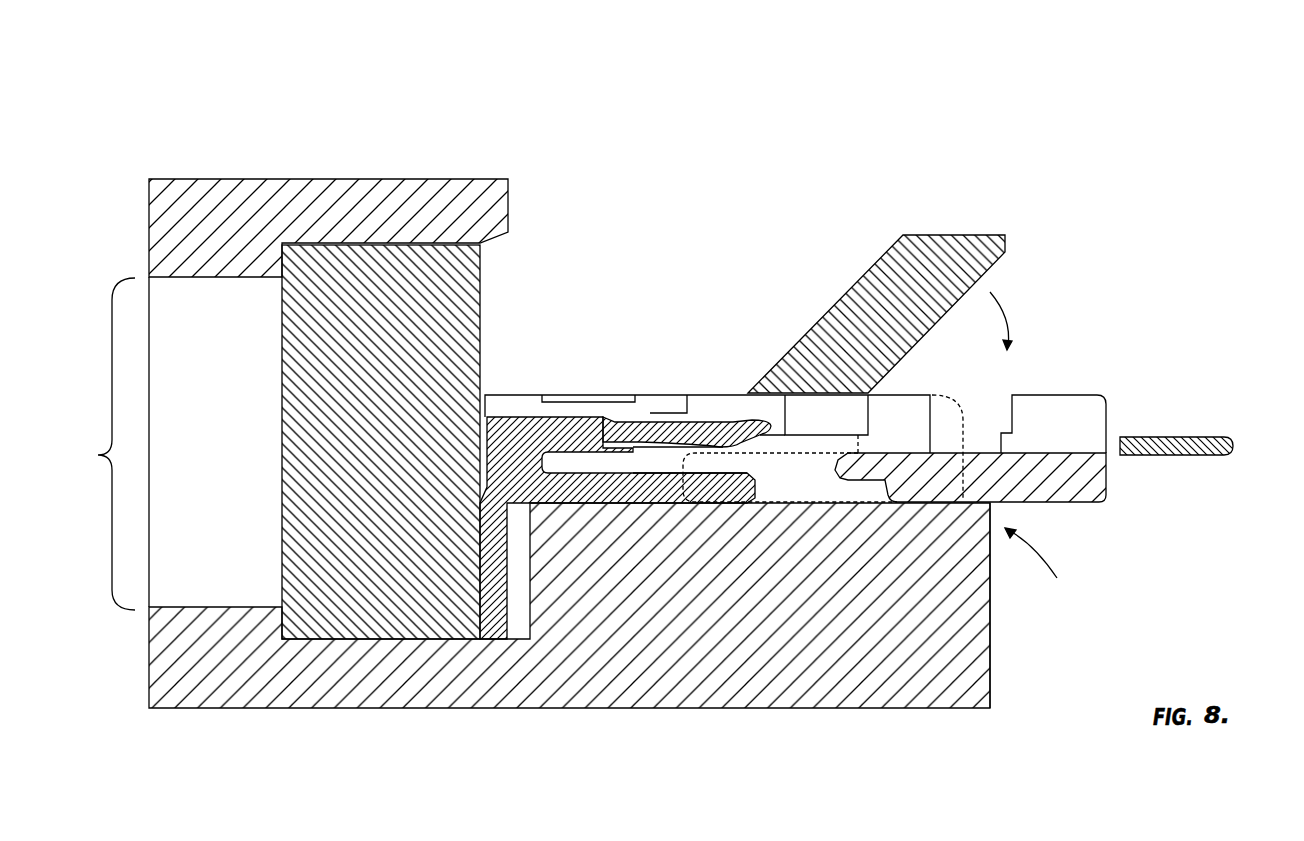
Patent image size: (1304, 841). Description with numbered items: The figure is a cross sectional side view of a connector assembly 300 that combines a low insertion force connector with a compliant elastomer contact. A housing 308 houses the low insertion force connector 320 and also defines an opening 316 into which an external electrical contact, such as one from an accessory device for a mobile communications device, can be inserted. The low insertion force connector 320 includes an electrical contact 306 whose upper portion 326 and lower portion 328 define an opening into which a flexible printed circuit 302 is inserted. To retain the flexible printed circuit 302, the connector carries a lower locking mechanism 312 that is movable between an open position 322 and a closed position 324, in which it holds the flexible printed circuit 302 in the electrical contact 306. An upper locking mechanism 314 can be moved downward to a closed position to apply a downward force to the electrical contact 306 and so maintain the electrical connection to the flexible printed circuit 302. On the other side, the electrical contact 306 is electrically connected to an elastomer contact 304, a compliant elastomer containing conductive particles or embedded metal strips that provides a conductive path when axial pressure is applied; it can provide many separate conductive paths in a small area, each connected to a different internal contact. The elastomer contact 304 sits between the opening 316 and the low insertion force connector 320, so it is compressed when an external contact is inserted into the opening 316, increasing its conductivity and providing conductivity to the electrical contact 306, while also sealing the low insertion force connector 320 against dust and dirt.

The connector assembly 300 is at (829, 92).
The flexible printed circuit 302 is at (1222, 437).
The elastomer contact 304 is at (378, 245).
The electrical contact 306 is at (548, 428).
The housing 308 is at (338, 179).
The lower locking mechanism 312 is at (1075, 395).
The upper locking mechanism 314 is at (1005, 236).
The opening 316 is at (98, 444).
The low insertion force connector 320 is at (1033, 605).
The open position 322 is at (970, 477).
The closed position 324 is at (810, 489).
The upper portion 326 is at (647, 421).
The lower portion 328 is at (686, 493).